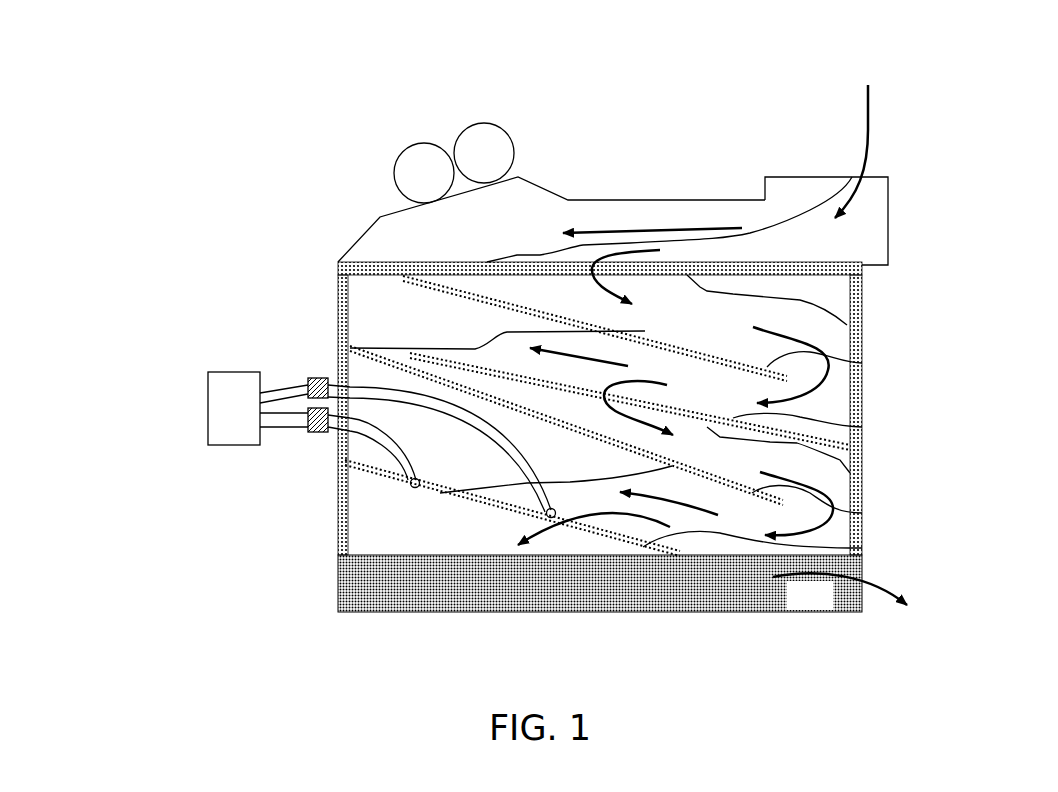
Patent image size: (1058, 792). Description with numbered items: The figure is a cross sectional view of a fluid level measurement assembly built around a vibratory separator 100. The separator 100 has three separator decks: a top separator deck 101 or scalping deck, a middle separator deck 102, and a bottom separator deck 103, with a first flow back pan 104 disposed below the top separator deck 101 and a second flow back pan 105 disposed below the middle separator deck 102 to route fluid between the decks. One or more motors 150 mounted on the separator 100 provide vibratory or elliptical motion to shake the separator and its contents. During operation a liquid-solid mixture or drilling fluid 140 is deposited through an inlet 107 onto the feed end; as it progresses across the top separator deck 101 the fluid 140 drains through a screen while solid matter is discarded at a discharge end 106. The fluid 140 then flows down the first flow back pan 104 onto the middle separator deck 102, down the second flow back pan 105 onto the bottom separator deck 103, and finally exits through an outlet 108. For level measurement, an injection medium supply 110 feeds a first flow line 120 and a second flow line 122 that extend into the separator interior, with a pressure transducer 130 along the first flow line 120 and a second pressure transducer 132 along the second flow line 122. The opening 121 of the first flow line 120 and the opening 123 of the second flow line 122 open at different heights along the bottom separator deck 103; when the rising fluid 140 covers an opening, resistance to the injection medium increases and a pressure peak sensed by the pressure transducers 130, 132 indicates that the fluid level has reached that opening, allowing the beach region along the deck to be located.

The vibratory separator 100 is at (338, 583).
The top separator deck 101 is at (666, 277).
The middle separator deck 102 is at (862, 427).
The bottom separator deck 103 is at (862, 548).
The first flow back pan 104 is at (862, 363).
The second flow back pan 105 is at (862, 513).
The discharge end 106 is at (422, 255).
The inlet 107 is at (773, 205).
The outlet 108 is at (790, 608).
The injection medium supply 110 is at (208, 413).
The first flow line 120 is at (388, 390).
The opening of first flow line 121 is at (551, 518).
The second flow line 122 is at (397, 450).
The opening of second flow line 123 is at (410, 484).
The pressure transducer 130 is at (313, 378).
The second pressure transducer 132 is at (317, 432).
The fluid 140 is at (845, 79).
The motor 150 is at (410, 144).